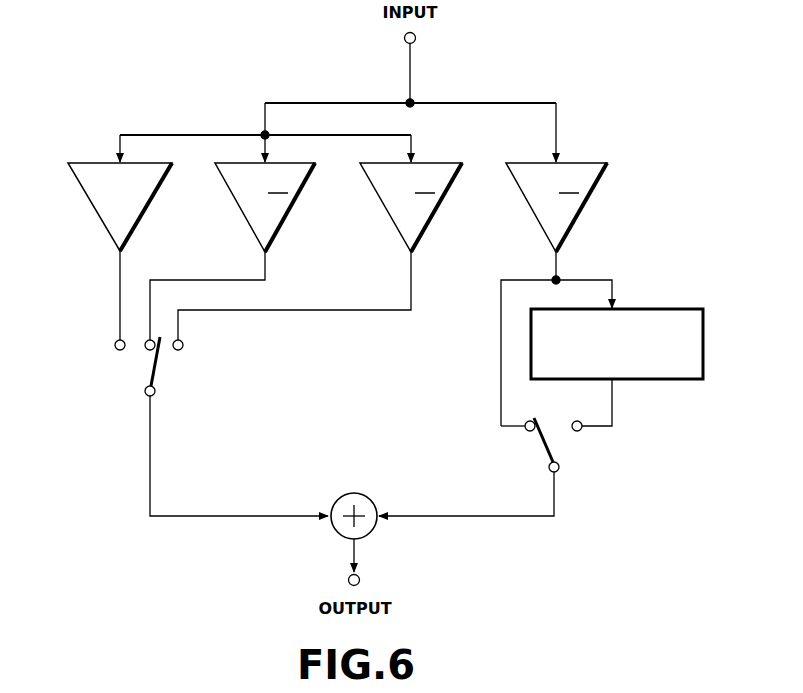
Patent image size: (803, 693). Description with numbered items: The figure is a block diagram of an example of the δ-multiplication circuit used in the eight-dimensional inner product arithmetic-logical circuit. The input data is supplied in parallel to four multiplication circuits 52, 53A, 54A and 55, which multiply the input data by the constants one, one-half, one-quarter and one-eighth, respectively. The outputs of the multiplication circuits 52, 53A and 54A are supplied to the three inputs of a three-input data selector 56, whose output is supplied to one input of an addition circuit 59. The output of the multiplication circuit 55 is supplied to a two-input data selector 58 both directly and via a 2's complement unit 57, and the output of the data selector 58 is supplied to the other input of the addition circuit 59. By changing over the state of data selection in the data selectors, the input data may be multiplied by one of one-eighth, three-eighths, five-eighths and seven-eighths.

The multiplication circuit 52 is at (100, 208).
The multiplication circuit 53A is at (252, 210).
The multiplication circuit 54A is at (398, 214).
The multiplication circuit 55 is at (565, 214).
The three-input data selector 56 is at (152, 368).
The 2's complement unit 57 is at (661, 315).
The two-input data selector 58 is at (546, 440).
The addition circuit 59 is at (361, 500).